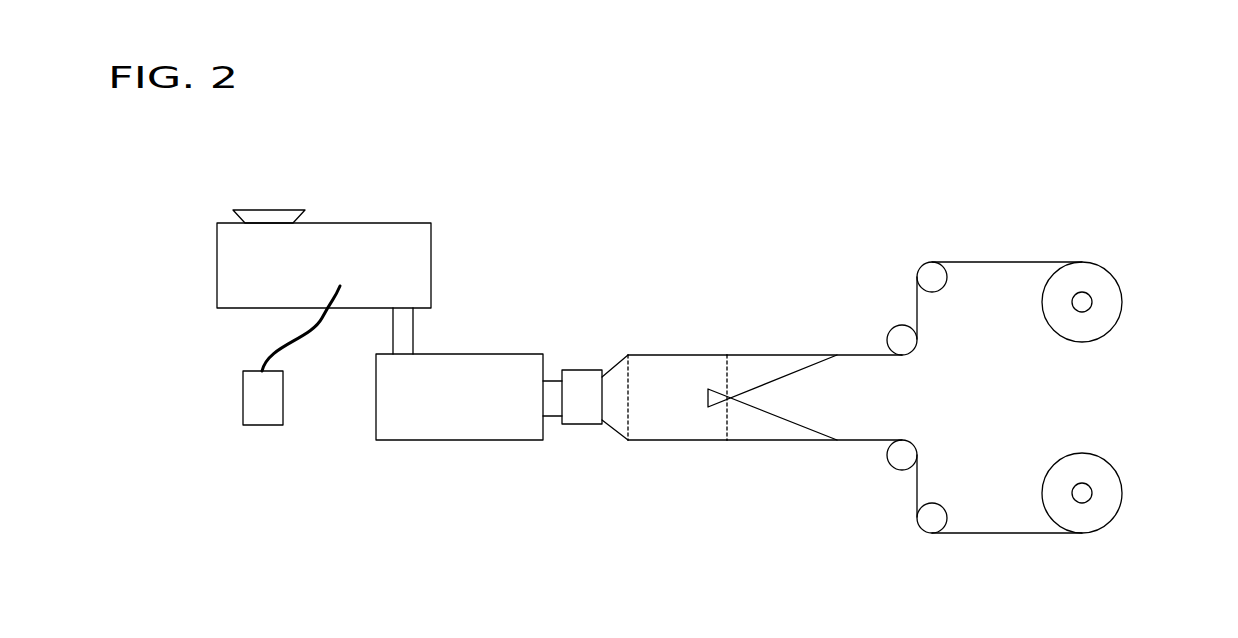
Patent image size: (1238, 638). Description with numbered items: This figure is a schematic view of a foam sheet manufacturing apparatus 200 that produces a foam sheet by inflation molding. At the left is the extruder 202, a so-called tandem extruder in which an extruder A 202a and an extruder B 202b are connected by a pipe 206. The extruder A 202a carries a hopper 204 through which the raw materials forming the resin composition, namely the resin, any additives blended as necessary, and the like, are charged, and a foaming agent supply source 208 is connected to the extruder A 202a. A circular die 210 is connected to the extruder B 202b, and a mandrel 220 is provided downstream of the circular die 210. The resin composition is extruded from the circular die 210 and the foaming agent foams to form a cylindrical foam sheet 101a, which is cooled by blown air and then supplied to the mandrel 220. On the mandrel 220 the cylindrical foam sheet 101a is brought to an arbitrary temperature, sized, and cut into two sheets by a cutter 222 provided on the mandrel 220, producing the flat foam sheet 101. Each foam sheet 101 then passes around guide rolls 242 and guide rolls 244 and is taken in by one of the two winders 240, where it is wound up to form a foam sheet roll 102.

The foam sheet manufacturing apparatus 200 is at (823, 187).
The extruder 202 is at (524, 250).
The extruder A 202a is at (432, 258).
The extruder B 202b is at (490, 368).
The hopper 204 is at (266, 210).
The pipe 206 is at (402, 332).
The foaming agent supply source 208 is at (254, 395).
The circular die 210 is at (580, 413).
The cylindrical foam sheet 101a is at (615, 376).
The mandrel 220 is at (675, 442).
The cutter 222 is at (718, 385).
The foam sheet 101 is at (782, 362).
The winder 240 is at (1143, 272).
The guide roll 242 is at (902, 328).
The guide roll 244 is at (920, 278).
The foam sheet roll 102 is at (1113, 300).